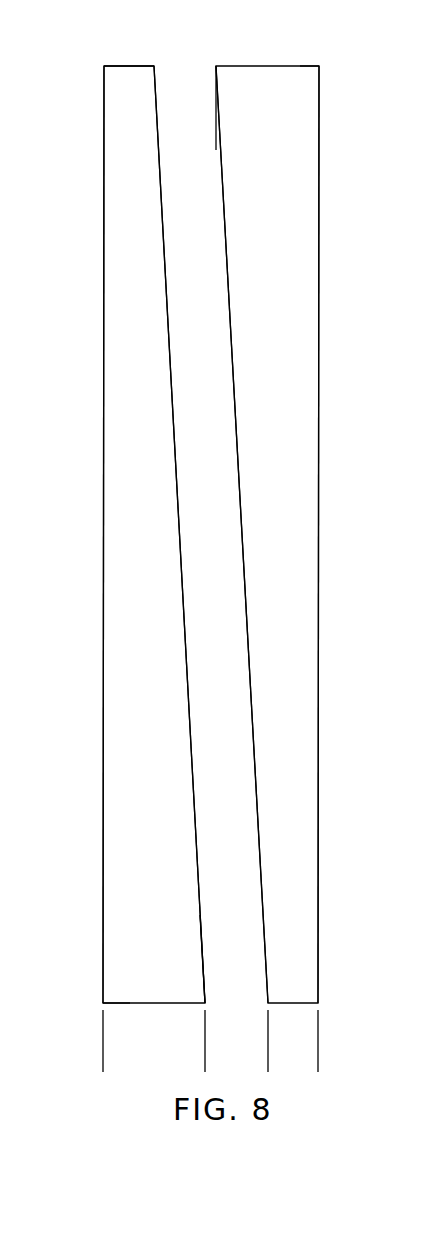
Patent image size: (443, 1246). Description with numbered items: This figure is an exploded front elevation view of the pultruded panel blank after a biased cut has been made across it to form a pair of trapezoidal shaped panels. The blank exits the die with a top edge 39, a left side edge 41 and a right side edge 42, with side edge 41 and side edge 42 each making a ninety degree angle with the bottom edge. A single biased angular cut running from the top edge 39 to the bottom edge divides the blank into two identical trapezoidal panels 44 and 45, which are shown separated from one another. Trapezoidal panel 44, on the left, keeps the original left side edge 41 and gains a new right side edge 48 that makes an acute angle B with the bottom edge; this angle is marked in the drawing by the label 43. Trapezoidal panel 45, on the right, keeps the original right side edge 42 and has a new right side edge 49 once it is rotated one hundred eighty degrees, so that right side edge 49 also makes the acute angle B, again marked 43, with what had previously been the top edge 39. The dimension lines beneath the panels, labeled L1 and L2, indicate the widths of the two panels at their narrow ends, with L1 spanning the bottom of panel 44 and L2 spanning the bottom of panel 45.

The top edge 39 is at (133, 66).
The left side edge 41 is at (104, 348).
The right side edge 42 is at (319, 710).
The tapered edge angle 43 is at (297, 80).
The trapezoidal panel 44 is at (80, 487).
The trapezoidal panel 45 is at (347, 452).
The right side edge 48 is at (176, 450).
The right side edge 49 is at (240, 478).
The width dimension L1 is at (194, 1052).
The width dimension L2 is at (228, 1052).